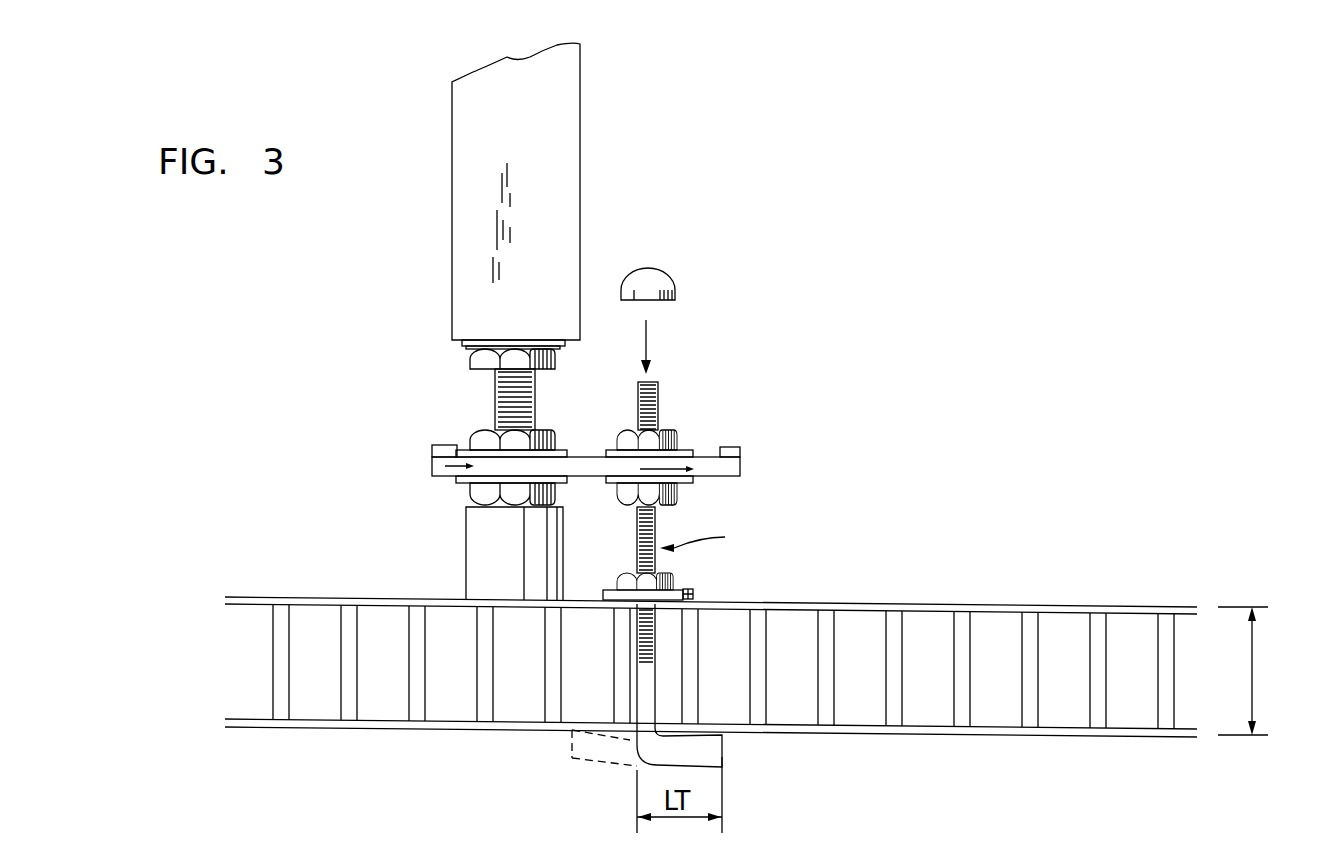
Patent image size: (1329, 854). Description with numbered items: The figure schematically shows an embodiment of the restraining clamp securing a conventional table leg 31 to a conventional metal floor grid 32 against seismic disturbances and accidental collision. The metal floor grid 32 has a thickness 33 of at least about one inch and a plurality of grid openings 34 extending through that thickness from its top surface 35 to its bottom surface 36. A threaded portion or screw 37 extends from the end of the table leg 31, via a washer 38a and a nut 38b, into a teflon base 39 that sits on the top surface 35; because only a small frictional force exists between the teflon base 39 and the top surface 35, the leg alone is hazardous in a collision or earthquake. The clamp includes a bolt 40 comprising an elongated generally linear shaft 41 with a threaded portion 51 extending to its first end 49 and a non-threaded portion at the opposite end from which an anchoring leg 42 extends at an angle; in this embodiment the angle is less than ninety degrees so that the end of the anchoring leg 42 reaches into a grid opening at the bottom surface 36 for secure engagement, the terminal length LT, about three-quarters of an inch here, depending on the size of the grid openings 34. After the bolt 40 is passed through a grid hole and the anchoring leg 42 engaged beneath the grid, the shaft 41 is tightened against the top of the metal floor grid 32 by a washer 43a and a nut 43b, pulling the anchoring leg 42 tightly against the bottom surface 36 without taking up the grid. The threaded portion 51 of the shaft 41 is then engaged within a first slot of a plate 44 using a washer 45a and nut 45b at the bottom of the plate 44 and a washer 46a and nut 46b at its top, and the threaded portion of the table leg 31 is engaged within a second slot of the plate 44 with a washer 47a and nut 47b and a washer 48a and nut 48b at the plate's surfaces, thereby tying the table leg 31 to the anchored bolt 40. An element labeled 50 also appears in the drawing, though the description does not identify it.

The table leg 31 is at (570, 120).
The metal floor grid 32 is at (1040, 607).
The thickness 33 is at (1256, 672).
The grid openings 34 is at (942, 623).
The top surface 35 is at (1135, 607).
The bottom surface 36 is at (1140, 735).
The threaded portion or screw 37 is at (495, 395).
The washer 38a is at (470, 346).
The nut 38b is at (478, 358).
The teflon base 39 is at (480, 557).
The bolt 40 is at (710, 535).
The shaft 41 is at (637, 533).
The anchoring leg 42 is at (717, 745).
The washer 43a is at (693, 596).
The nut 43b is at (680, 578).
The plate 44 is at (742, 462).
The washer 45a is at (690, 480).
The nut 45b is at (680, 498).
The washer 46a is at (690, 452).
The nut 46b is at (680, 437).
The washer 47a is at (470, 483).
The nut 47b is at (475, 492).
The washer 48a is at (465, 452).
The nut 48b is at (478, 435).
The first end 49 is at (658, 385).
The alternate position of hooked foot 50 is at (640, 763).
The threaded portion 51 is at (660, 403).